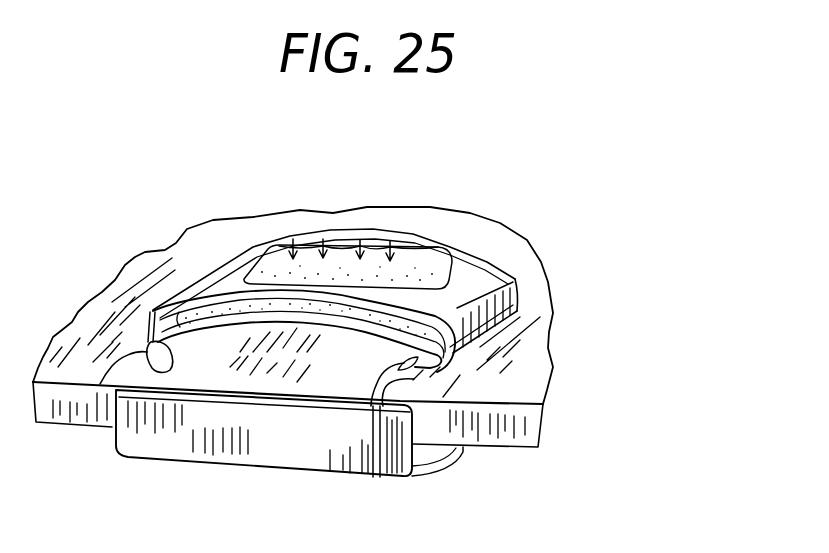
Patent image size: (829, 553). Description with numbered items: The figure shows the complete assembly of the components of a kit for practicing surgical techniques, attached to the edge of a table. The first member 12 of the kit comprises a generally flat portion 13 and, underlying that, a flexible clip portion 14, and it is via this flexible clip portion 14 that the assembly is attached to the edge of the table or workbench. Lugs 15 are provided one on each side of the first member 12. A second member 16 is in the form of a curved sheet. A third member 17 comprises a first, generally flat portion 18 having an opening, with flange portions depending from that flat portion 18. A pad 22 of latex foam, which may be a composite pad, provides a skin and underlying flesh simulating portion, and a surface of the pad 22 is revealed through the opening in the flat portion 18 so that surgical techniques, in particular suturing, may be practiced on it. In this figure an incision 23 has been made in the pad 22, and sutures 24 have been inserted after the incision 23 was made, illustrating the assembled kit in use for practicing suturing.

The first member 12 is at (180, 460).
The generally flat portion 13 is at (283, 378).
The flexible clip portion 14 is at (447, 478).
The lugs 15 is at (108, 393).
The second member 16 is at (390, 345).
The third member 17 is at (210, 258).
The first, generally flat portion 18 is at (249, 253).
The pad of latex foam 22 is at (427, 252).
The incision 23 is at (347, 257).
The sutures 24 is at (297, 258).